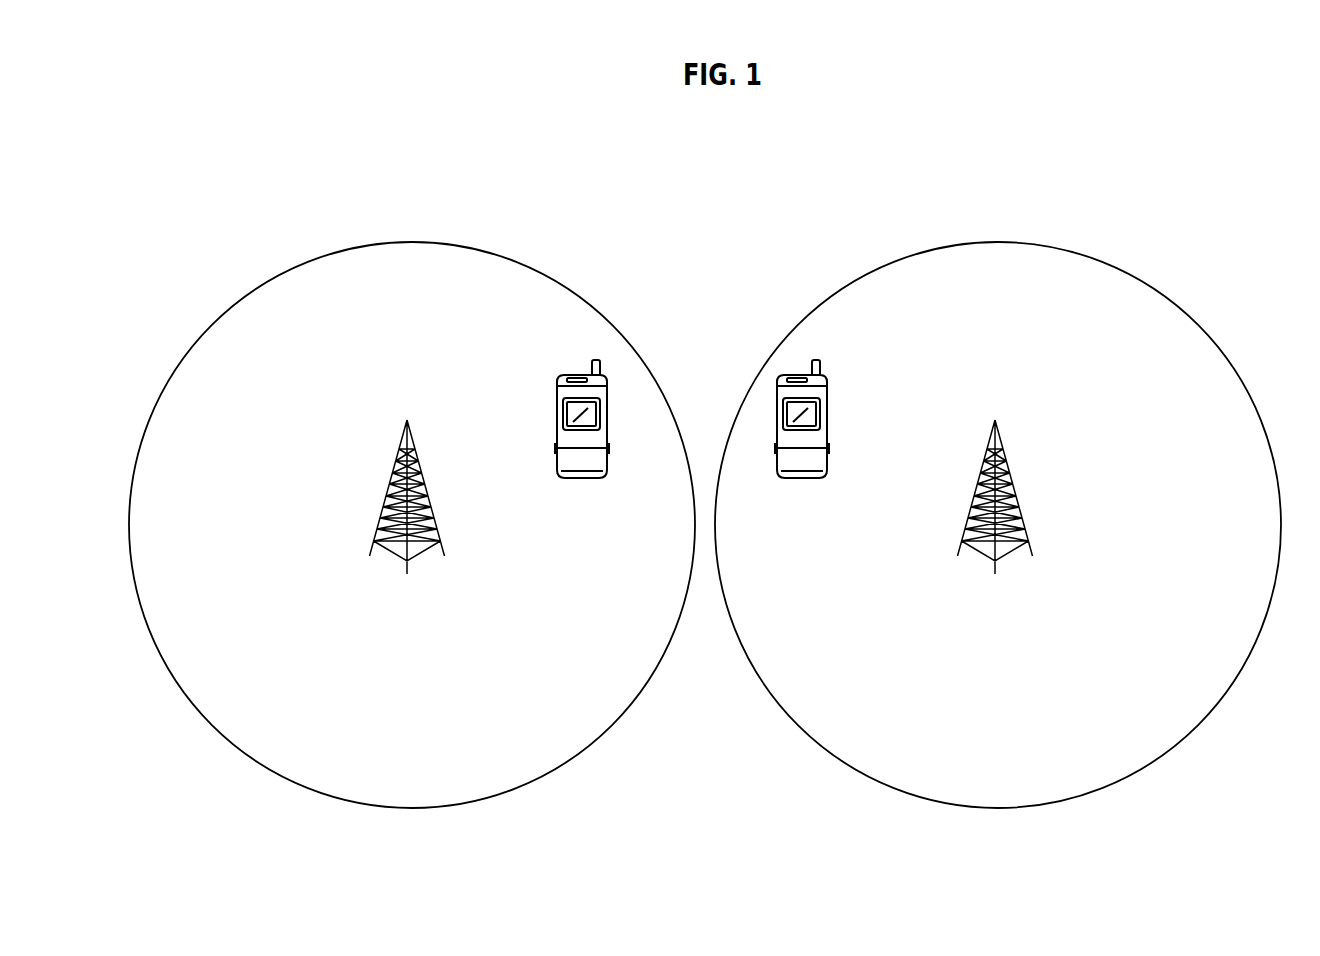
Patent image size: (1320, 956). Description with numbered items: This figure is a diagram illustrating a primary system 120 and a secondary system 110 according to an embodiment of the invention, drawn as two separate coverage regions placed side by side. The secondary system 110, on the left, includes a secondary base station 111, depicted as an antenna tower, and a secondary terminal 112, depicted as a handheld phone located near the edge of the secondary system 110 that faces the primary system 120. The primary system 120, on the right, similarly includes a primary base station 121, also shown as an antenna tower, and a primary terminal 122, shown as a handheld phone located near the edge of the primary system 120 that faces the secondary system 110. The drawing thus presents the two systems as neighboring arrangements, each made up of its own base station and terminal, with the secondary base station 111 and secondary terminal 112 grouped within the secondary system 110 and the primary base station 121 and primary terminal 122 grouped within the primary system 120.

The secondary system 110 is at (412, 507).
The secondary base station 111 is at (407, 529).
The secondary terminal 112 is at (581, 450).
The primary system 120 is at (998, 507).
The primary base station 121 is at (994, 529).
The primary terminal 122 is at (821, 450).